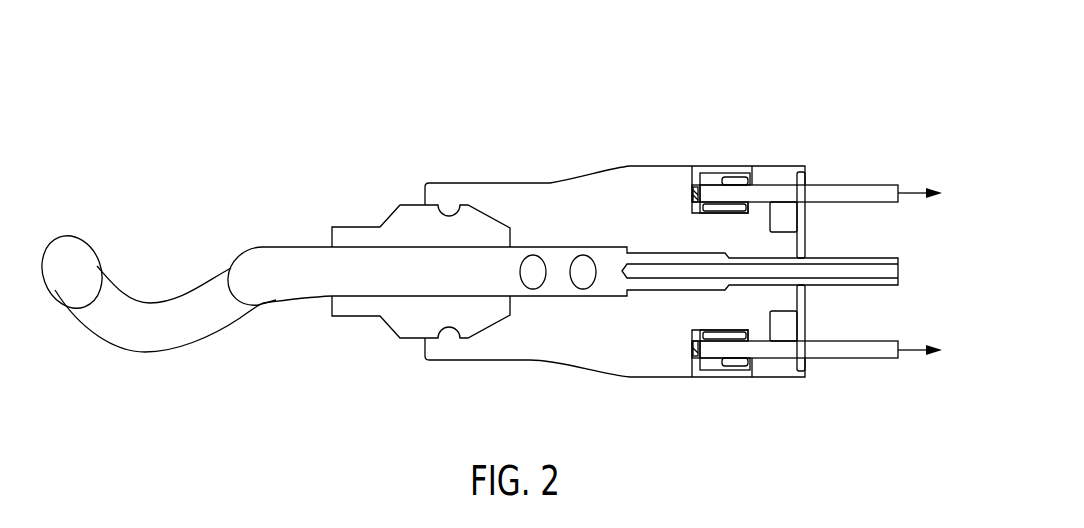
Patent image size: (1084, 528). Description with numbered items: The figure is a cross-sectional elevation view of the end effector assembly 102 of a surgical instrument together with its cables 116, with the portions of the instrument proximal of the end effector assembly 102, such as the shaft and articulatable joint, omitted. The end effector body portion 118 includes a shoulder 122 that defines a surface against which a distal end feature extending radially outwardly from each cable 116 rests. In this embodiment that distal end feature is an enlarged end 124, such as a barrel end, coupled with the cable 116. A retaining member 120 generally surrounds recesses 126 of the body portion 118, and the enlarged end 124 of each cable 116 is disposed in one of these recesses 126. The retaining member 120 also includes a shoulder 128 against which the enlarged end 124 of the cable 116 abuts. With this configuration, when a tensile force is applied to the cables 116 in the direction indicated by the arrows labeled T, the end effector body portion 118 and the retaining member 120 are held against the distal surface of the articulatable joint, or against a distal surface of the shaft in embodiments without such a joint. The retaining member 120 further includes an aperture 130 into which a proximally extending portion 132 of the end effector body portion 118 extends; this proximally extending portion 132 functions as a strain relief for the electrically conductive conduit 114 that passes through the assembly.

The end effector assembly 102 is at (550, 93).
The electrically conductive conduit 114 is at (898, 272).
The cable 116 is at (830, 192).
The end effector body portion 118 is at (530, 352).
The retaining member 120 is at (787, 175).
The shoulder 122 is at (753, 337).
The enlarged end 124 is at (722, 177).
The recess 126 is at (693, 204).
The shoulder 128 is at (755, 182).
The aperture 130 is at (783, 320).
The proximally extending portion 132 is at (783, 247).